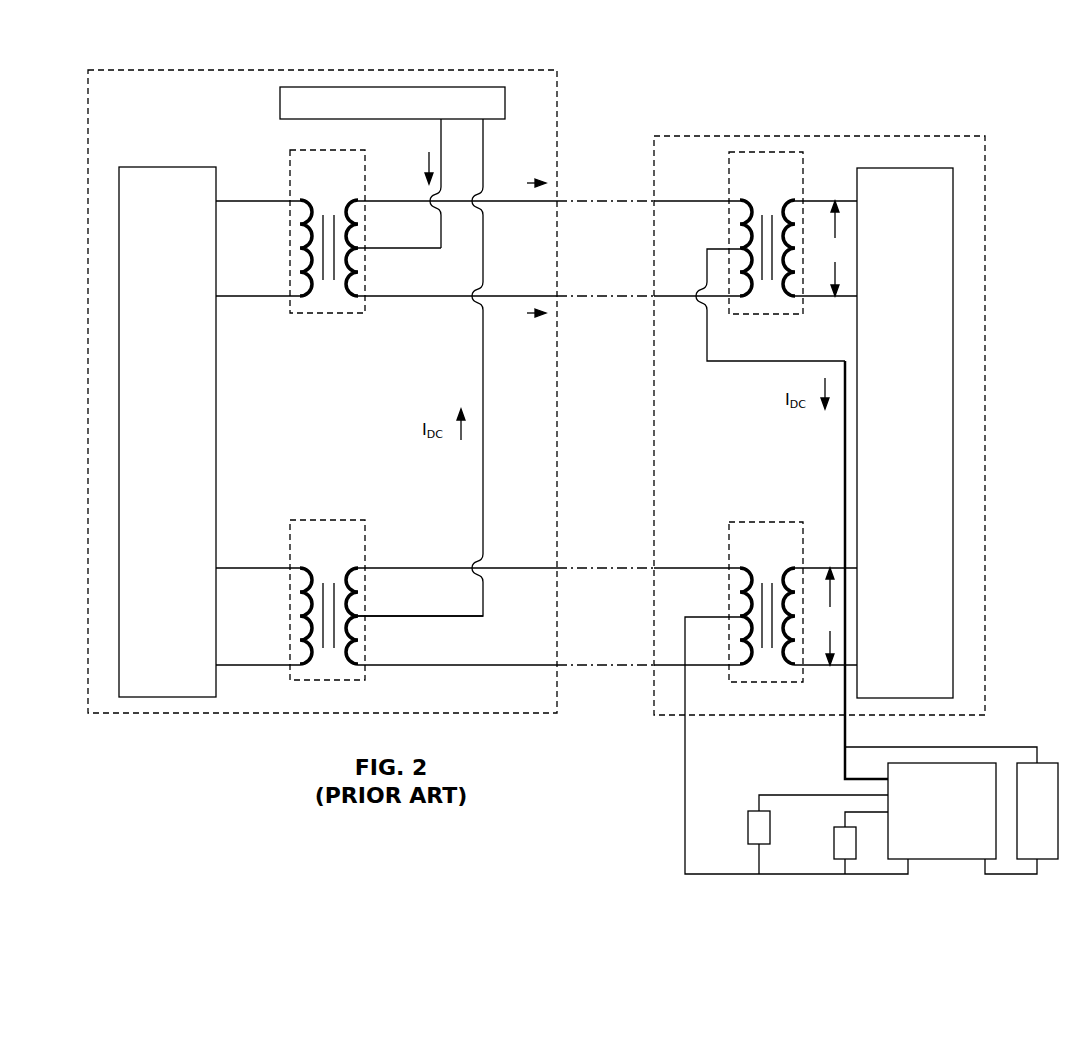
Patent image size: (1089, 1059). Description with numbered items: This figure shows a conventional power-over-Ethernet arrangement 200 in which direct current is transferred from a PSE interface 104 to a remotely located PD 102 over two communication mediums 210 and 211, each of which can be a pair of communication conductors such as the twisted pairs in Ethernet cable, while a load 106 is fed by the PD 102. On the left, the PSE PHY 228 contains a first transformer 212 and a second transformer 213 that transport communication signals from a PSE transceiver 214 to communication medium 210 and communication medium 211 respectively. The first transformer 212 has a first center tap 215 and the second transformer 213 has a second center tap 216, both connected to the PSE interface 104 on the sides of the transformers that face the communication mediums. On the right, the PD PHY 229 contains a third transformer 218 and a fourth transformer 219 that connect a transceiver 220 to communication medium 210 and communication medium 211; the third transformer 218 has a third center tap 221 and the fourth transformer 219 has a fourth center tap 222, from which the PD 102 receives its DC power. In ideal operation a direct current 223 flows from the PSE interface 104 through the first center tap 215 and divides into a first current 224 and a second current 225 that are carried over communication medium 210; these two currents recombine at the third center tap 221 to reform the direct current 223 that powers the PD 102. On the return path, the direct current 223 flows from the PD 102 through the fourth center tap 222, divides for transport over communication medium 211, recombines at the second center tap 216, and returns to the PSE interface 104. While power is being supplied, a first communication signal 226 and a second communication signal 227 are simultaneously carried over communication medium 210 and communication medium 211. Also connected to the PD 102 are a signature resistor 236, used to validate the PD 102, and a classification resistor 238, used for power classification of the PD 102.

The power over Ethernet system 200 is at (917, 61).
The PSE PHY 228 is at (536, 70).
The PD PHY 229 is at (802, 137).
The PSE interface 104 is at (280, 110).
The PD 102 is at (952, 861).
The load 106 is at (1048, 763).
The first transformer 212 is at (327, 231).
The second transformer 213 is at (327, 600).
The PSE transceiver 214 is at (167, 432).
The first center tap 215 is at (383, 228).
The second center tap 216 is at (397, 601).
The third transformer 218 is at (766, 233).
The fourth transformer 219 is at (766, 602).
The transceiver 220 is at (905, 433).
The third center tap 221 is at (686, 240).
The fourth center tap 222 is at (694, 604).
The direct current 223 is at (413, 149).
The first current 224 is at (518, 168).
The second current 225 is at (523, 347).
The first communication signal 226 is at (834, 248).
The second communication signal 227 is at (829, 616).
The communication medium 210 is at (578, 280).
The communication medium 211 is at (618, 583).
The signature resistor 236 is at (748, 826).
The classification resistor 238 is at (834, 845).